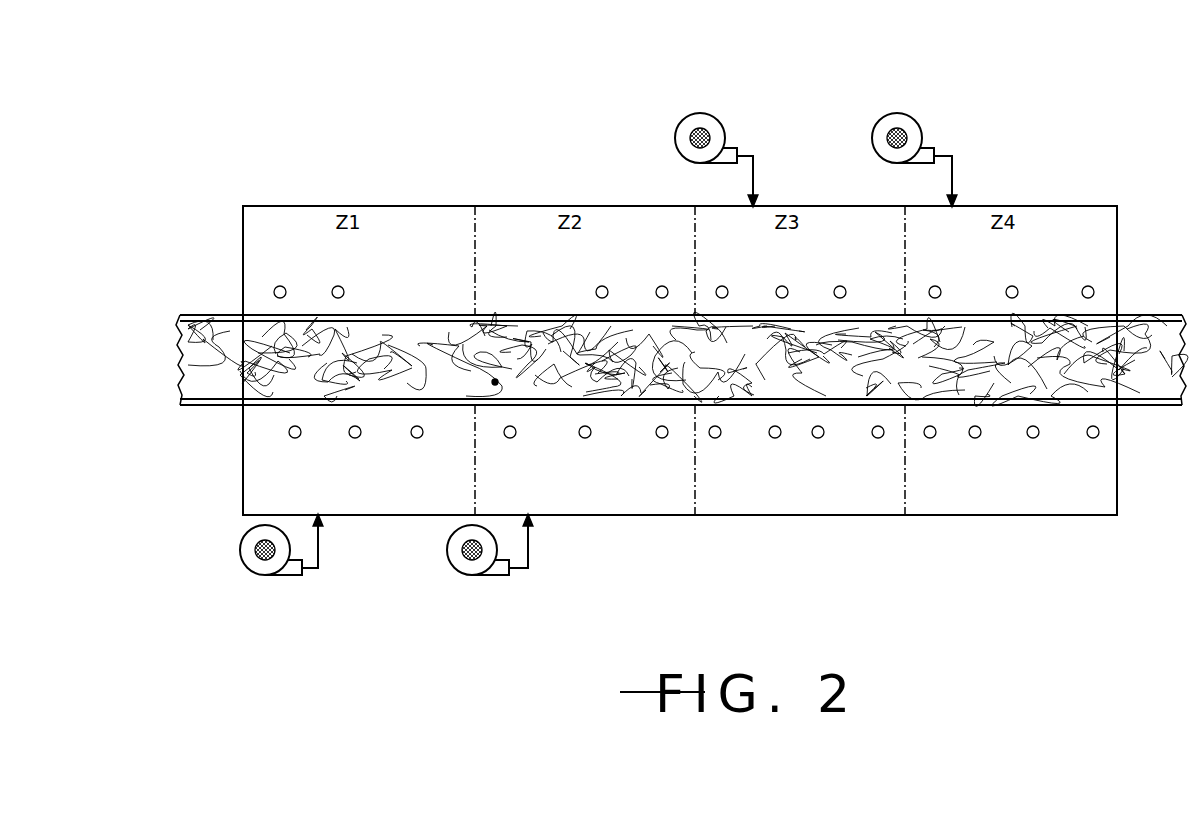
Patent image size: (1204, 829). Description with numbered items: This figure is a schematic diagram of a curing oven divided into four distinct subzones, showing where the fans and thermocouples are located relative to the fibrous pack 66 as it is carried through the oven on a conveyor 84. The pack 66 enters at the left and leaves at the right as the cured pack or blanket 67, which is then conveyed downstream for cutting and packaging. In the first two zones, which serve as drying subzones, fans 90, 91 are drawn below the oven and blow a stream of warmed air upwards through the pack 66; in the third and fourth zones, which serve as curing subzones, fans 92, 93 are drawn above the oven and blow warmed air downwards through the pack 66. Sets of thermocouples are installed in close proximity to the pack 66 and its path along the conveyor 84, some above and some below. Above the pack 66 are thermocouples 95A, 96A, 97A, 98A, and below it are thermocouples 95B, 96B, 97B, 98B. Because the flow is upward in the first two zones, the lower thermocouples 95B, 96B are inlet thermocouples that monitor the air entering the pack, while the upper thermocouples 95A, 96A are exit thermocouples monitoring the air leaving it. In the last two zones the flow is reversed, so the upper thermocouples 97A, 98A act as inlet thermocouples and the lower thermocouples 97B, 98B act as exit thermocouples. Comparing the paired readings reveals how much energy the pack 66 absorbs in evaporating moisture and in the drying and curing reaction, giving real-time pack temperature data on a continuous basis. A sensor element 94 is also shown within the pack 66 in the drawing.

The conveyor 84 is at (208, 406).
The pack 66 is at (245, 363).
The cured pack or blanket 67 is at (1128, 368).
The sensor 94 is at (498, 380).
The fan 90 is at (251, 576).
The fan 91 is at (477, 576).
The fan 92 is at (702, 113).
The fan 93 is at (898, 113).
The upper thermocouples 95A is at (334, 288).
The lower thermocouples 95B is at (296, 438).
The upper thermocouples 96A is at (658, 287).
The lower thermocouples 96B is at (511, 438).
The upper thermocouples 97A is at (765, 262).
The lower thermocouples 97B is at (716, 438).
The upper thermocouples 98A is at (984, 258).
The lower thermocouples 98B is at (931, 438).